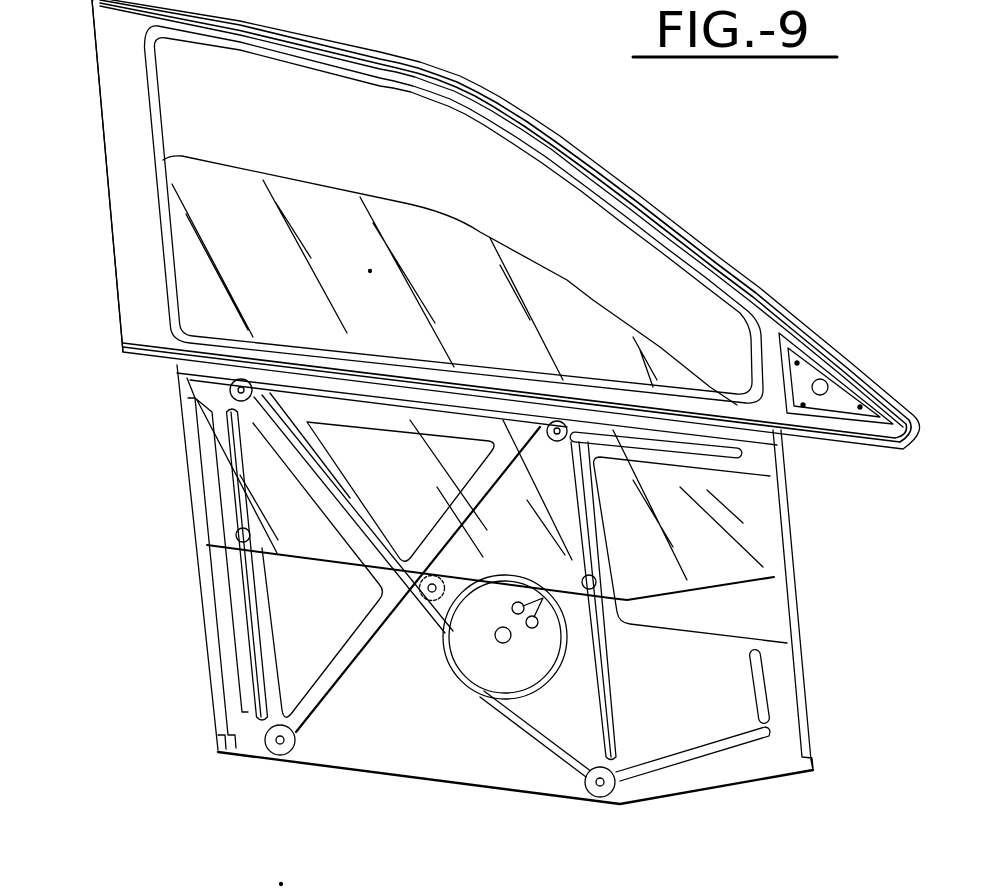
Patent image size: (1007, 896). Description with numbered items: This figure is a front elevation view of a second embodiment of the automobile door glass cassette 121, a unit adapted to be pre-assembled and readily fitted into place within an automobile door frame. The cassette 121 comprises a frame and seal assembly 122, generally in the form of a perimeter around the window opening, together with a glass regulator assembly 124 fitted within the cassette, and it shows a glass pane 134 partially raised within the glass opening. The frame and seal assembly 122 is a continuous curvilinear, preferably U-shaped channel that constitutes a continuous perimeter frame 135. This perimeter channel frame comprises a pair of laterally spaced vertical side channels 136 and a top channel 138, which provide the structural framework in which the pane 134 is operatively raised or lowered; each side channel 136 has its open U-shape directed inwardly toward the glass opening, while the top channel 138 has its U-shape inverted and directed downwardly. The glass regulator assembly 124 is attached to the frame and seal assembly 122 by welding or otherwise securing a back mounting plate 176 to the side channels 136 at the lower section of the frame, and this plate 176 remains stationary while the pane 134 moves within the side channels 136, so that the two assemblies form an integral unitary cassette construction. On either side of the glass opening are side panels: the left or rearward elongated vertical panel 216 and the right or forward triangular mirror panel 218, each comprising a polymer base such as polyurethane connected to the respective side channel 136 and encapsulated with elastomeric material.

The automobile door glass cassette 121 is at (686, 193).
The frame and seal assembly 122 is at (590, 154).
The glass regulator assembly 124 is at (475, 745).
The glass pane 134 is at (357, 190).
The perimeter frame 135 is at (489, 114).
The vertical side channels 136 is at (187, 493).
The top channel 138 is at (398, 60).
The back mounting plate 176 is at (395, 758).
The elongated vertical panel 216 is at (140, 296).
The triangular mirror panel 218 is at (817, 370).